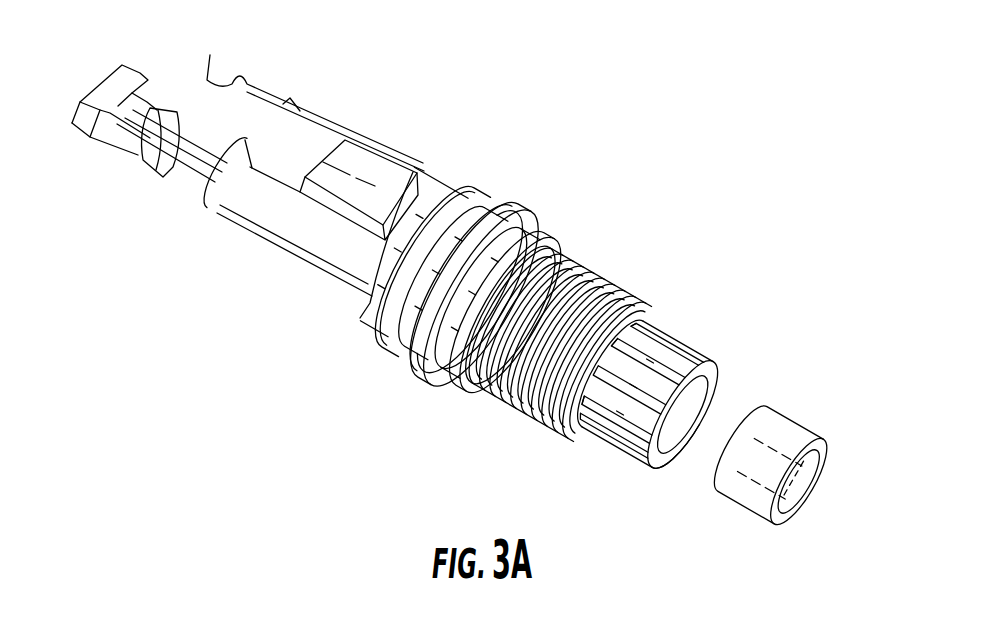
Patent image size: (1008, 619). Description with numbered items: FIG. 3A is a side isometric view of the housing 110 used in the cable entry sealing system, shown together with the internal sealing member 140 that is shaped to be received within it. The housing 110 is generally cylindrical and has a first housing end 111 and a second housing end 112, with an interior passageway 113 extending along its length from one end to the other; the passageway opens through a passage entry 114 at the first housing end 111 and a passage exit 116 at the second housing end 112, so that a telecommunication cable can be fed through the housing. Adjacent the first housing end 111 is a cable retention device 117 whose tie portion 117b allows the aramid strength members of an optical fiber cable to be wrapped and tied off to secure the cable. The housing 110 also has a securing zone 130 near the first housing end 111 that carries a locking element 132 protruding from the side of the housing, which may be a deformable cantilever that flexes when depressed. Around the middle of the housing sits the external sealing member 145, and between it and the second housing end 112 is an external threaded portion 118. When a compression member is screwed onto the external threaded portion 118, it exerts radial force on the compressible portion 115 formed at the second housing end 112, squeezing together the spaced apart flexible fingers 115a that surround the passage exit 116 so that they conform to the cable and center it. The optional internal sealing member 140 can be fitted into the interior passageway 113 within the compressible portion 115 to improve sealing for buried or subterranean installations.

The housing 110 is at (498, 160).
The first housing end 111 is at (315, 113).
The second housing end 112 is at (666, 379).
The interior passageway 113 is at (717, 390).
The passage entry 114 is at (210, 162).
The compressible portion 115 is at (663, 360).
The flexible fingers 115a is at (640, 452).
The passage exit 116 is at (693, 447).
The cable retention device 117 is at (139, 143).
The tie portion 117b is at (113, 148).
The external threaded portion 118 is at (520, 385).
The securing zone 130 is at (332, 174).
The locking element 132 is at (375, 172).
The internal sealing member 140 is at (780, 443).
The external sealing member 145 is at (413, 348).